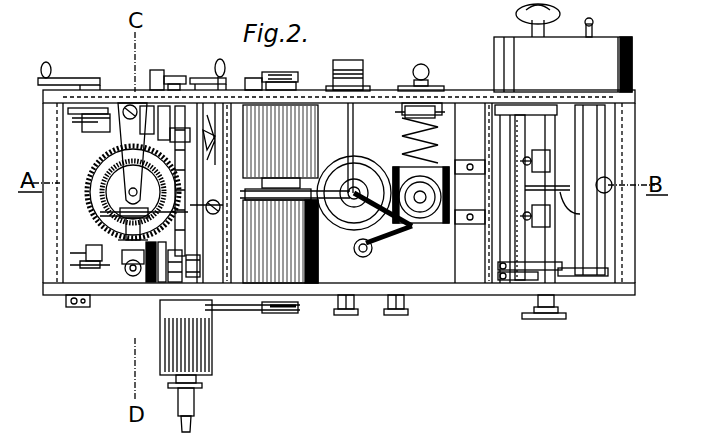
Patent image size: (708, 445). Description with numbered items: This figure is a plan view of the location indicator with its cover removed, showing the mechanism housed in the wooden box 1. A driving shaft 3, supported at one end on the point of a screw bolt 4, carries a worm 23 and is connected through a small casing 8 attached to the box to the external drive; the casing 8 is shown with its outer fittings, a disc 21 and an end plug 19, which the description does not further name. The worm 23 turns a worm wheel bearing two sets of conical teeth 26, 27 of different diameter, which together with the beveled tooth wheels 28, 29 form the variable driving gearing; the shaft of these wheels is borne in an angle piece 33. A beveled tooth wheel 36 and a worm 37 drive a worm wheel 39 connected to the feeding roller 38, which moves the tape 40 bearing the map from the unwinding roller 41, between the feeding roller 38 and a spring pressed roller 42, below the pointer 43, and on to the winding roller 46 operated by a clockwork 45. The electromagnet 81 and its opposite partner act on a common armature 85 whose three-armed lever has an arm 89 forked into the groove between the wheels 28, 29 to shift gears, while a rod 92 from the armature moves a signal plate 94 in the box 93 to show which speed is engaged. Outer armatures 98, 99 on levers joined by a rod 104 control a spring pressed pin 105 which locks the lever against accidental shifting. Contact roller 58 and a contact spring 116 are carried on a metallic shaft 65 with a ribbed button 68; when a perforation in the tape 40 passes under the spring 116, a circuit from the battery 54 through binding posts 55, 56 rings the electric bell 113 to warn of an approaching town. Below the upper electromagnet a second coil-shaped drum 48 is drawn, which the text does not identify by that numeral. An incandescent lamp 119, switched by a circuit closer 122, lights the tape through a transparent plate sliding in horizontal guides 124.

The wooden box 1 is at (470, 298).
The driving shaft 3 is at (200, 258).
The screw bolt 4 is at (218, 160).
The casing 8 is at (206, 366).
The plug 19 is at (196, 412).
The disc 21 is at (200, 386).
The worm 23 is at (206, 223).
The set of conical teeth 26 is at (118, 180).
The set of conical teeth 27 is at (118, 212).
The beveled tooth wheel 28 is at (112, 210).
The beveled tooth wheel 29 is at (112, 232).
The angle piece 33 is at (137, 180).
The beveled tooth wheel 36 is at (98, 300).
The worm 37 is at (128, 278).
The feeding roller 38 is at (140, 282).
The worm wheel 39 is at (158, 284).
The tape 40 is at (504, 282).
The unwinding roller 41 is at (86, 253).
The spring pressed roller 42 is at (180, 284).
The pointer 43 is at (456, 270).
The clockwork 45 is at (563, 48).
The winding roller 46 is at (612, 160).
The lower drum 48 is at (300, 270).
The battery 54 is at (522, 218).
The binding post 55 is at (404, 312).
The binding post 56 is at (350, 312).
The contact roller 58 is at (522, 162).
The metallic shaft 65 is at (554, 300).
The ribbed button 68 is at (556, 320).
The electromagnet 81 is at (315, 150).
The armature 85 is at (316, 230).
The arm 89 is at (184, 222).
The rod 92 is at (352, 152).
The box 93 is at (362, 62).
The signal plate 94 is at (370, 85).
The armature 98 is at (285, 312).
The armature 99 is at (284, 74).
The rod 104 is at (195, 95).
The pin 105 is at (207, 78).
The electric bell 113 is at (370, 178).
The contact spring 116 is at (580, 214).
The incandescent lamp 119 is at (418, 214).
The circuit closer 122 is at (426, 72).
The horizontal guides 124 is at (486, 284).